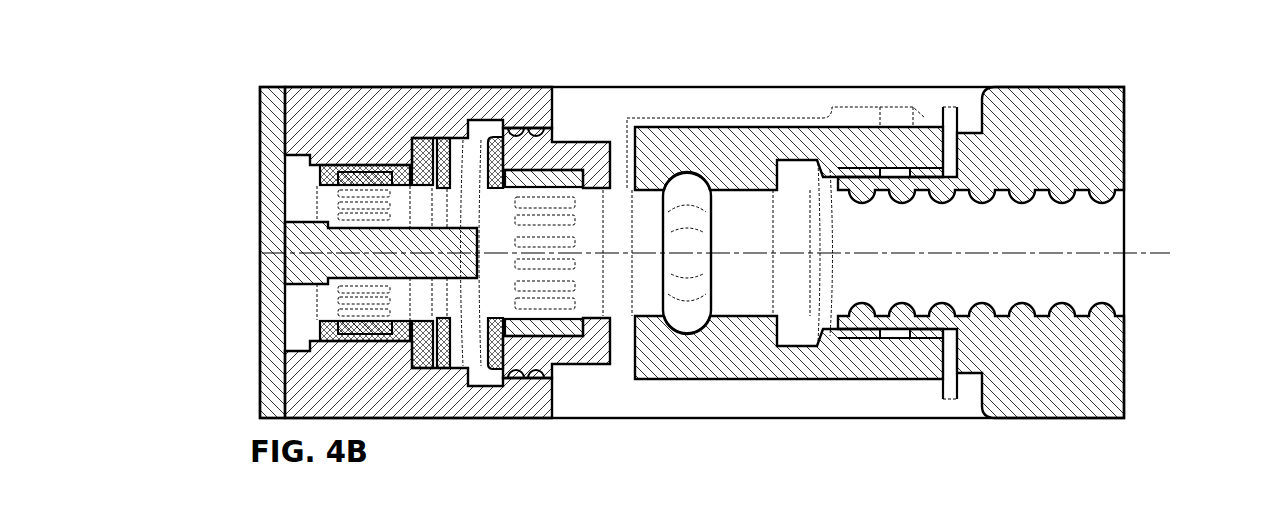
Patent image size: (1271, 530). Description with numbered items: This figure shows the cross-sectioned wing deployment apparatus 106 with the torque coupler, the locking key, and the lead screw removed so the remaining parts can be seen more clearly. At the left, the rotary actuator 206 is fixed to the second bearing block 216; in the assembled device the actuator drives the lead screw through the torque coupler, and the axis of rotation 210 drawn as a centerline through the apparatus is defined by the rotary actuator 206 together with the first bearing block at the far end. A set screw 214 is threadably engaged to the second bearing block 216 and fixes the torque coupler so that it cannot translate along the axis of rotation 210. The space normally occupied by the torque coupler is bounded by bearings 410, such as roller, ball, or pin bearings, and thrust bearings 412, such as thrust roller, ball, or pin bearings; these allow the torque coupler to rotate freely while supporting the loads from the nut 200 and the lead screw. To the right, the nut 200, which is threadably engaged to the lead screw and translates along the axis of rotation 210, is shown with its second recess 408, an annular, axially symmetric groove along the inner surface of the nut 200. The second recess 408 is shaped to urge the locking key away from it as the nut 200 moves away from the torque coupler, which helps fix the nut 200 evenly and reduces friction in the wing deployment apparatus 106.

The wing deployment apparatus 106 is at (246, 40).
The nut 200 is at (863, 158).
The rotary actuator 206 is at (294, 240).
The axis of rotation 210 is at (1156, 253).
The set screw 214 is at (583, 157).
The second bearing block 216 is at (497, 102).
The second recess 408 is at (707, 173).
The bearings 410 is at (325, 165).
The thrust bearings 412 is at (447, 368).